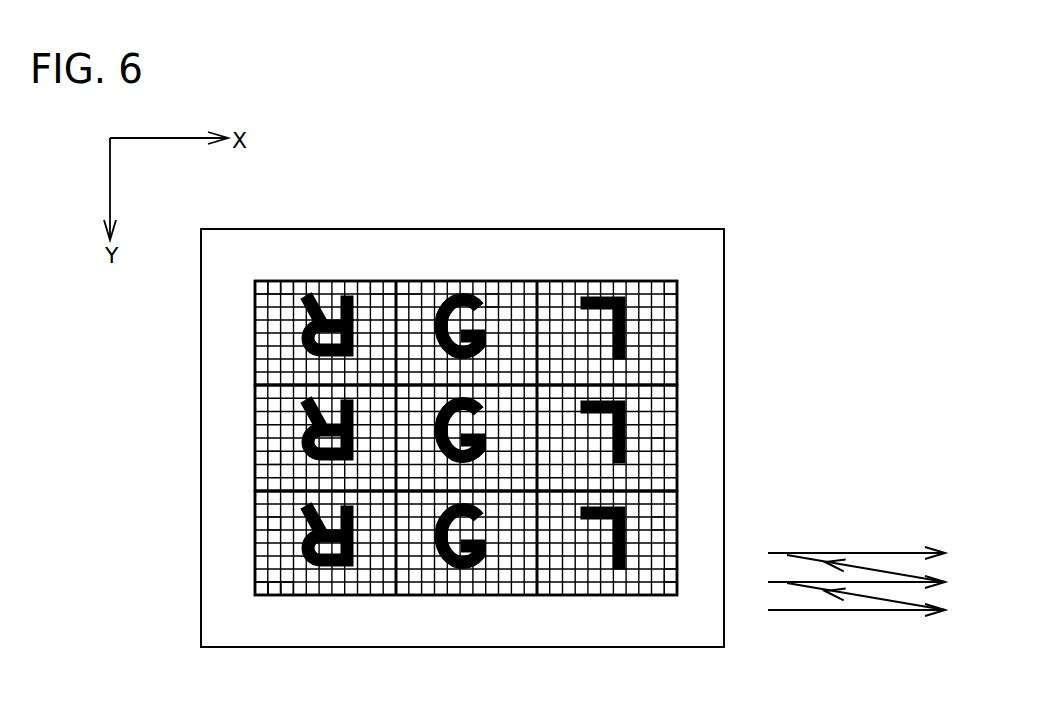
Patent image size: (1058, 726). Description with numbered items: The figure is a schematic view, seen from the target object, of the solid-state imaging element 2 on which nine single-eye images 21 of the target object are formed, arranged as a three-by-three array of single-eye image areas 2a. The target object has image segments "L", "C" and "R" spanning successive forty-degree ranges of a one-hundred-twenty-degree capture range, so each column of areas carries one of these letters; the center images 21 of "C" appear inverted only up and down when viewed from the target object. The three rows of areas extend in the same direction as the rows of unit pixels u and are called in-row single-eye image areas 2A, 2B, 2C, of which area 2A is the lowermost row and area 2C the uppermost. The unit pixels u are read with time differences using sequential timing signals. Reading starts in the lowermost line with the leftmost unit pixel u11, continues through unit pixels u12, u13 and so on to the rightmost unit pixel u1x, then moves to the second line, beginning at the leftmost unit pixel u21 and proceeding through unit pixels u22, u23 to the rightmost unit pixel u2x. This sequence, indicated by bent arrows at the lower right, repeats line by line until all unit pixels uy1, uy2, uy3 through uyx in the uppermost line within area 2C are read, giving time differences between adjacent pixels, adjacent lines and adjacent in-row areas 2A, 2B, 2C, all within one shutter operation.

The solid-state imaging element 2 is at (704, 240).
The single-eye image area 2a is at (275, 300).
The in-row single-eye image area 2A is at (230, 568).
The in-row single-eye image area 2B is at (230, 430).
The in-row single-eye image area 2C is at (230, 357).
The single-eye image 21 is at (496, 296).
The unit pixel u is at (418, 284).
The leftmost unit pixel u11 is at (263, 597).
The unit pixel u12 is at (277, 597).
The unit pixel u13 is at (290, 597).
The rightmost unit pixel u1x is at (670, 598).
The leftmost unit pixel u21 is at (260, 582).
The unit pixel u22 is at (278, 578).
The unit pixel u23 is at (287, 575).
The rightmost unit pixel u2x is at (672, 577).
The unit pixel uy1 is at (261, 283).
The unit pixel uy2 is at (275, 283).
The unit pixel uy3 is at (291, 284).
The unit pixel uyx is at (668, 284).